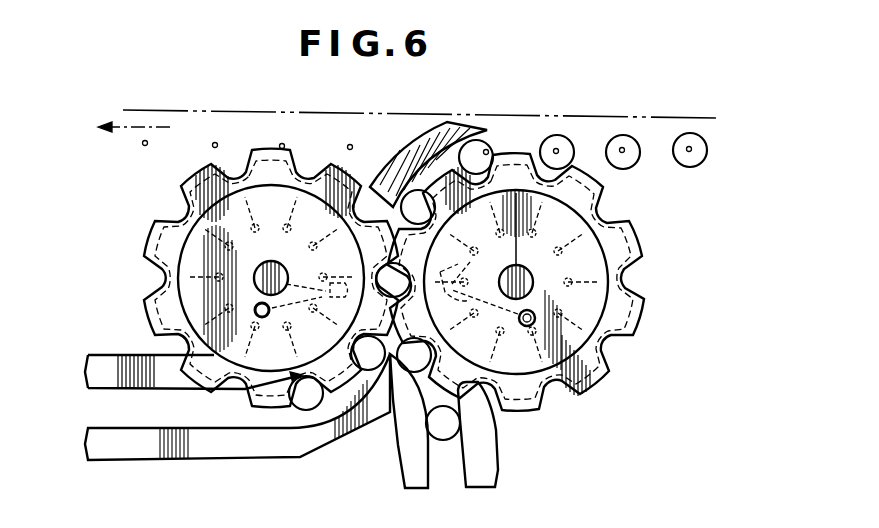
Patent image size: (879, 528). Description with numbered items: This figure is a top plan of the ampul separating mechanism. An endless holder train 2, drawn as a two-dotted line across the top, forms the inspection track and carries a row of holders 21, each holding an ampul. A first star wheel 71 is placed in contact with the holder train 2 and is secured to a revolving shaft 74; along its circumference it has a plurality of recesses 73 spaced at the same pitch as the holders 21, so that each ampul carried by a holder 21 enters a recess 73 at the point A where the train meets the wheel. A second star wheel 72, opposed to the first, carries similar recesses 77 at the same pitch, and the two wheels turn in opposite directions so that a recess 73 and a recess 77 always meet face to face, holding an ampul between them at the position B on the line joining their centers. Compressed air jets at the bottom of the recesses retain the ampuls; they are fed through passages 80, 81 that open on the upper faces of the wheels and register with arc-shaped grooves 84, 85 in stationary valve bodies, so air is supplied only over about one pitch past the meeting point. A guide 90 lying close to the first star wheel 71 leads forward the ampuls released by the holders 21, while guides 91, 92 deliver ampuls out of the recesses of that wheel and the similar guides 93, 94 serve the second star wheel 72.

The endless holder train 2 is at (645, 117).
The holder 21 is at (146, 146).
The first star wheel 71 is at (637, 339).
The second star wheel 72 is at (170, 236).
The recess 73 is at (633, 283).
The revolving shaft 74 is at (526, 273).
The recess 77 is at (312, 172).
The passage 80 is at (471, 270).
The passage 81 is at (347, 273).
The arc-shaped groove 84 is at (493, 298).
The arc-shaped groove 85 is at (282, 269).
The guide 90 is at (474, 125).
The guide 91 is at (494, 466).
The guide 92 is at (403, 477).
The guide 93 is at (229, 450).
The guide 94 is at (177, 388).
The ball A is at (569, 140).
The position B is at (343, 298).